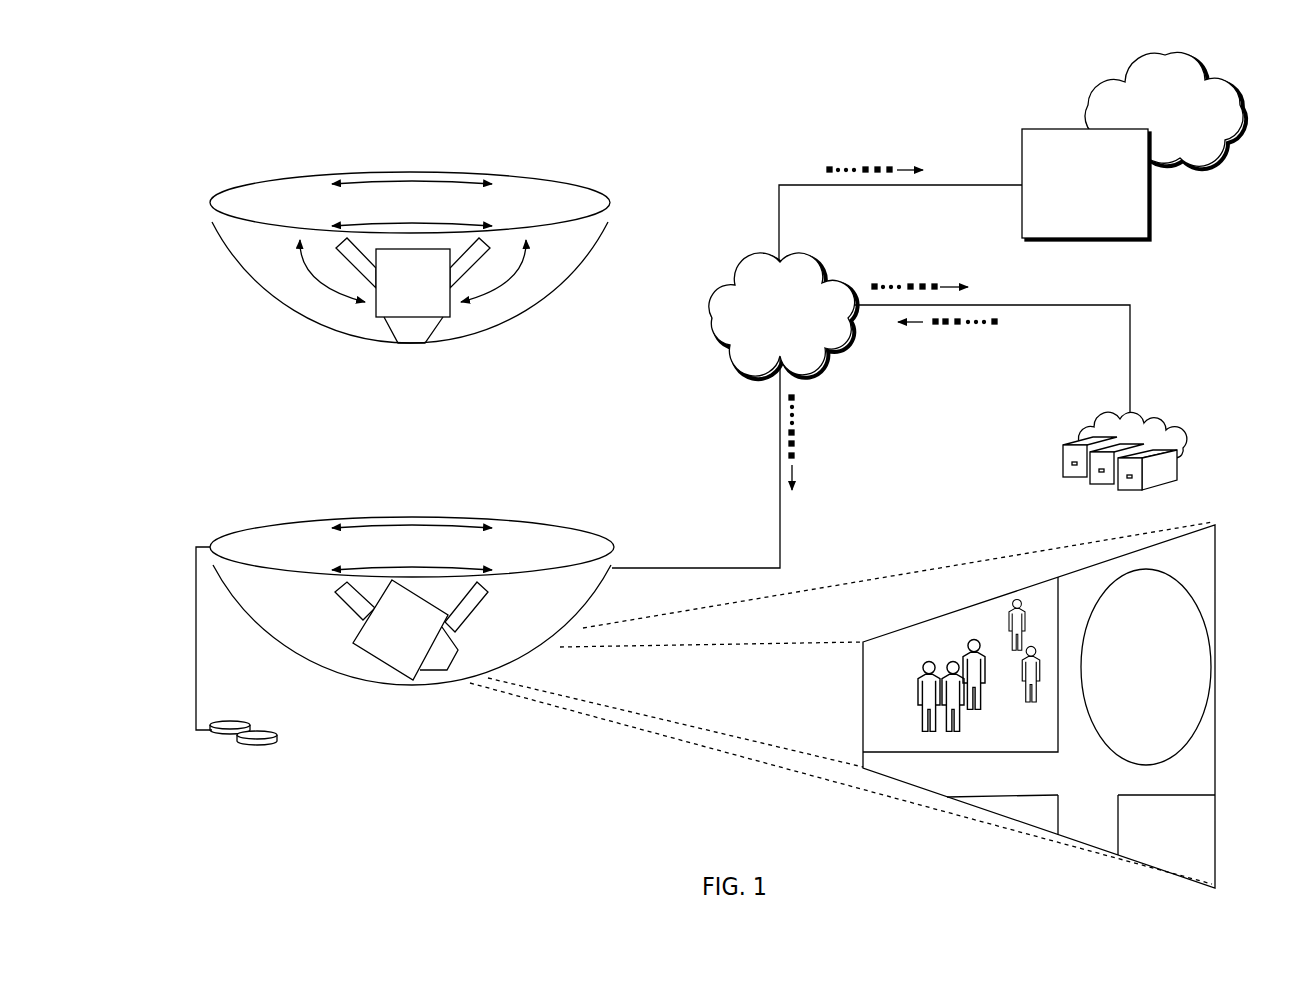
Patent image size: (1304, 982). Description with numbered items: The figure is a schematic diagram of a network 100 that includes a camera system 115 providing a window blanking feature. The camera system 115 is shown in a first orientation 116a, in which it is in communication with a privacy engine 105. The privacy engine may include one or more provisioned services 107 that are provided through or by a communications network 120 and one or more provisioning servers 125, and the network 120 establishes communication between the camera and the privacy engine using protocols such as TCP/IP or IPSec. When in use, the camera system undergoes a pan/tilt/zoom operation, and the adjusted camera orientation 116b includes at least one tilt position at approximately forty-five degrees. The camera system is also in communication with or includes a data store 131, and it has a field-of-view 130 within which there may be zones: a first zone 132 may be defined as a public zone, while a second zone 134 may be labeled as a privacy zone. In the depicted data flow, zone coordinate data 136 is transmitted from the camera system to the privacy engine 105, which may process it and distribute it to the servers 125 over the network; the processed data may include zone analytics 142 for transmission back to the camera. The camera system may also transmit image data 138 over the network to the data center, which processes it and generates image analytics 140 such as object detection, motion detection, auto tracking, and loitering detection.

The network 100 is at (237, 83).
The privacy engine 105 is at (1152, 202).
The provisioned services 107 is at (1208, 72).
The camera system 115 is at (297, 163).
The first orientation 116a is at (525, 175).
The adjusted camera orientation 116b is at (525, 518).
The network 120 is at (793, 338).
The provisioning servers 125 is at (1160, 422).
The field-of-view 130 is at (643, 678).
The data store 131 is at (255, 728).
The first zone 132 is at (892, 692).
The second zone 134 is at (1200, 612).
The zone coordinate data 136 is at (863, 167).
The image data 138 is at (908, 285).
The image analytics 140 is at (955, 332).
The zone analytics 142 is at (797, 442).